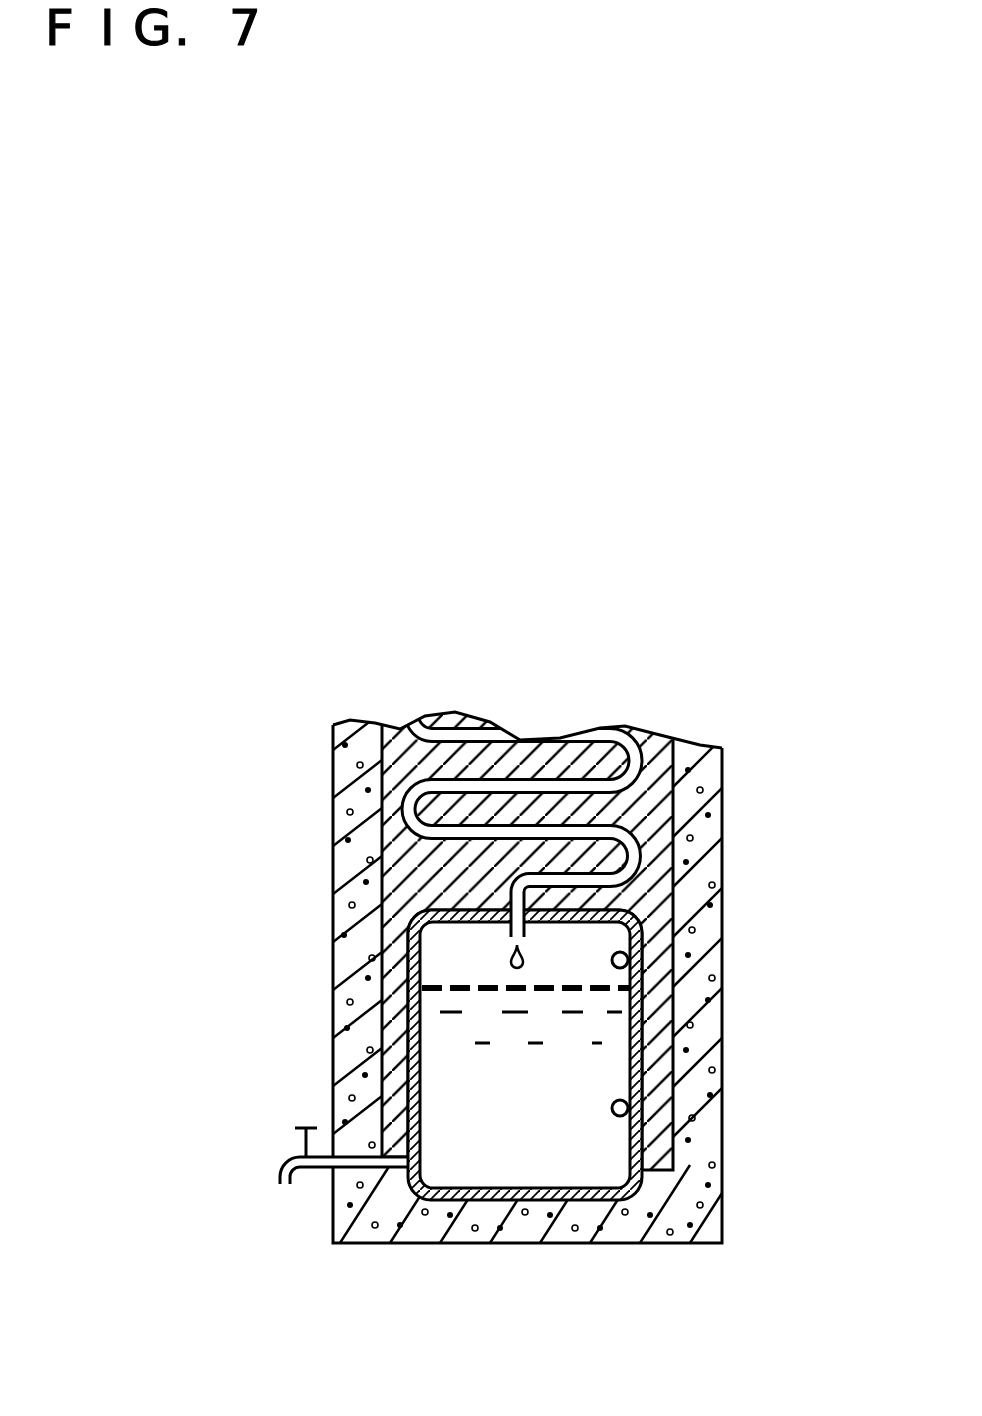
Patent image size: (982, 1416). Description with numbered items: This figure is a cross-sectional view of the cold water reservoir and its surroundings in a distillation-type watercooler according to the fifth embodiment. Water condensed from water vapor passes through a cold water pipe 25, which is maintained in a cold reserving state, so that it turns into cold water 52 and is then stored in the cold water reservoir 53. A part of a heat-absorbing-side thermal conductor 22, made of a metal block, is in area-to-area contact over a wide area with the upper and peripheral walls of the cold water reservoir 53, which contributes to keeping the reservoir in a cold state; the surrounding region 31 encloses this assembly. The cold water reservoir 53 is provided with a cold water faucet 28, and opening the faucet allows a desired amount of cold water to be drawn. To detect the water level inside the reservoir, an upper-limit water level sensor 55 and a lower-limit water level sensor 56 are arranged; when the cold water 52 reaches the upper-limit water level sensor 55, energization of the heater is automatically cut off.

The heat-absorbing-side thermal conductor 22 is at (447, 722).
The cold water pipe 25 is at (551, 782).
The cold water faucet 28 is at (288, 1160).
The heat insulating housing 31 is at (712, 872).
The cold water 52 is at (550, 1127).
The cold water reservoir 53 is at (557, 1202).
The upper-limit water level sensor 55 is at (628, 961).
The lower-limit water level sensor 56 is at (628, 1108).